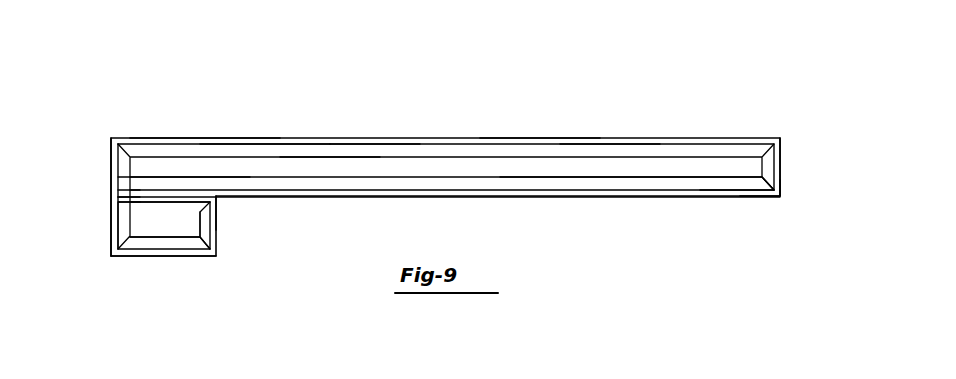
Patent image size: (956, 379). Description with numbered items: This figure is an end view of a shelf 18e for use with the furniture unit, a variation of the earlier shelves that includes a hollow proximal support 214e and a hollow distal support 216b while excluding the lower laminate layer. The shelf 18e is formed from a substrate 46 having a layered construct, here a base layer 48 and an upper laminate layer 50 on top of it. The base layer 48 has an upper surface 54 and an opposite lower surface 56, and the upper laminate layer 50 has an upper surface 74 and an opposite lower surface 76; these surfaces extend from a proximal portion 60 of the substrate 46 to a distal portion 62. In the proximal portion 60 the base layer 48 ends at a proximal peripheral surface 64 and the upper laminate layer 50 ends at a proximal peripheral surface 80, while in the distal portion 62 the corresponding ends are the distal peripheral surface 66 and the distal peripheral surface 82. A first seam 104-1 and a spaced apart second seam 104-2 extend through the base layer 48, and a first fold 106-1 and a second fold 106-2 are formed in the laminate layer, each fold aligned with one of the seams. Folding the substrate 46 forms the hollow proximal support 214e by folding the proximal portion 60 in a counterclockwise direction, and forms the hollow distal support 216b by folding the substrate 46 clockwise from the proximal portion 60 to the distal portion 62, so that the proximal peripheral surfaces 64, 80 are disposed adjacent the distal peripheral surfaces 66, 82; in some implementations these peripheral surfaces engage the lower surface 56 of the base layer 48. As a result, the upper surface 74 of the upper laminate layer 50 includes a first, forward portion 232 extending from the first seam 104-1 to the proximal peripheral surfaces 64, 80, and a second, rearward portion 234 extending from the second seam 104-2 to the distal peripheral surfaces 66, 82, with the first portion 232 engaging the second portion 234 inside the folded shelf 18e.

The shelf 18e is at (748, 128).
The proximal portion 60 is at (111, 157).
The hollow distal support 216b is at (219, 137).
The first portion of the upper surface 232 is at (188, 195).
The substrate 46 is at (258, 137).
The base layer 48 is at (316, 150).
The upper laminate layer 50 is at (368, 144).
The upper surface of the upper laminate layer 74 is at (535, 138).
The upper surface of the base layer 54 is at (603, 145).
The distal portion 62 is at (780, 163).
The lower surface of the upper laminate layer 76 is at (578, 145).
The second seam 104-2 is at (762, 182).
The second fold 106-2 is at (782, 197).
The first fold 106-1 is at (217, 198).
The first seam 104-1 is at (201, 212).
The second portion of the upper surface 234 is at (183, 197).
The lower surface of the base layer 56 is at (148, 222).
The distal peripheral surface of the base layer 66 is at (124, 181).
The distal peripheral surface of the upper laminate layer 82 is at (130, 193).
The proximal peripheral surface of the upper laminate layer 80 is at (130, 200).
The proximal peripheral surface of the base layer 64 is at (130, 208).
The hollow proximal support 214e is at (110, 265).